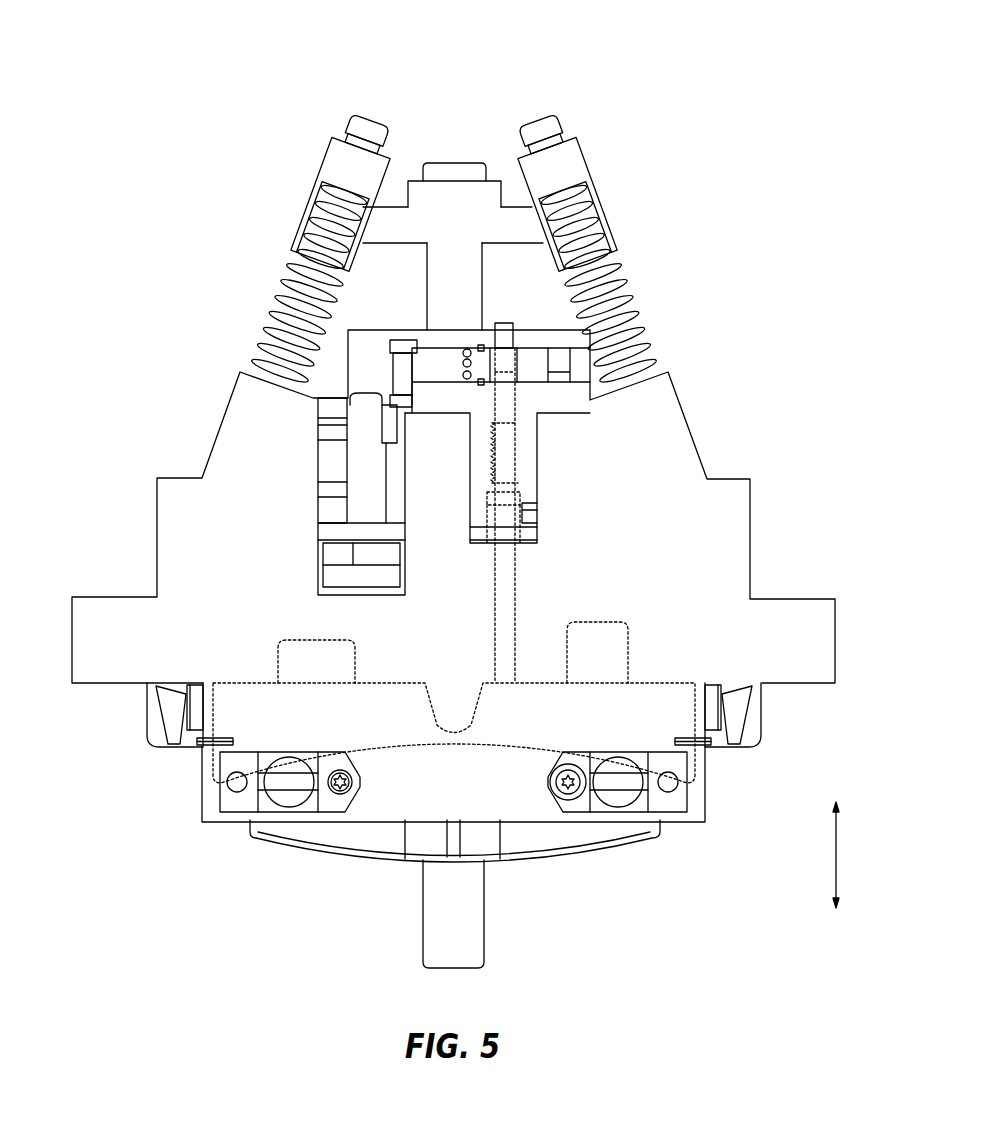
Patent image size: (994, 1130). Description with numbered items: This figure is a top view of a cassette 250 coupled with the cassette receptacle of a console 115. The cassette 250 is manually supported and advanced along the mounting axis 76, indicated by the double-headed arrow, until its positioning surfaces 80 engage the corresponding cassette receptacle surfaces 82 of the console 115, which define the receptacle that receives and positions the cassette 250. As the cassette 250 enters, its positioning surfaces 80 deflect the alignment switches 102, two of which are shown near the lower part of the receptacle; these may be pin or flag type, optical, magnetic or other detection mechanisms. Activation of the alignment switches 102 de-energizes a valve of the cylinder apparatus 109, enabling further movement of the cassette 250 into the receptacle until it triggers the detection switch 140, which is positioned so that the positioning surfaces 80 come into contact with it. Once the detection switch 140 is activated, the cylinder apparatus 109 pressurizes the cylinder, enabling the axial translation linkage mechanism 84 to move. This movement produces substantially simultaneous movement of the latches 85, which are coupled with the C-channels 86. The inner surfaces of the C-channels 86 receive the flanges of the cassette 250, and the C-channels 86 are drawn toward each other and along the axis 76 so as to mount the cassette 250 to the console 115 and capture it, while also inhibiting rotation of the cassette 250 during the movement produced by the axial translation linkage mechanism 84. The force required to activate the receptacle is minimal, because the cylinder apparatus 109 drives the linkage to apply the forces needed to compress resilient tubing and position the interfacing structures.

The mounting axis 76 is at (837, 855).
The positioning surfaces 80 is at (398, 704).
The cassette receptacle surfaces 82 is at (580, 690).
The axial translation linkage mechanism 84 is at (371, 113).
The latches 85 is at (455, 198).
The C-channels 86 is at (147, 718).
The alignment switch 102 is at (288, 784).
The cylinder apparatus 109 is at (367, 372).
The console 115 is at (752, 512).
The detection switch 140 is at (493, 358).
The cassette 250 is at (647, 829).